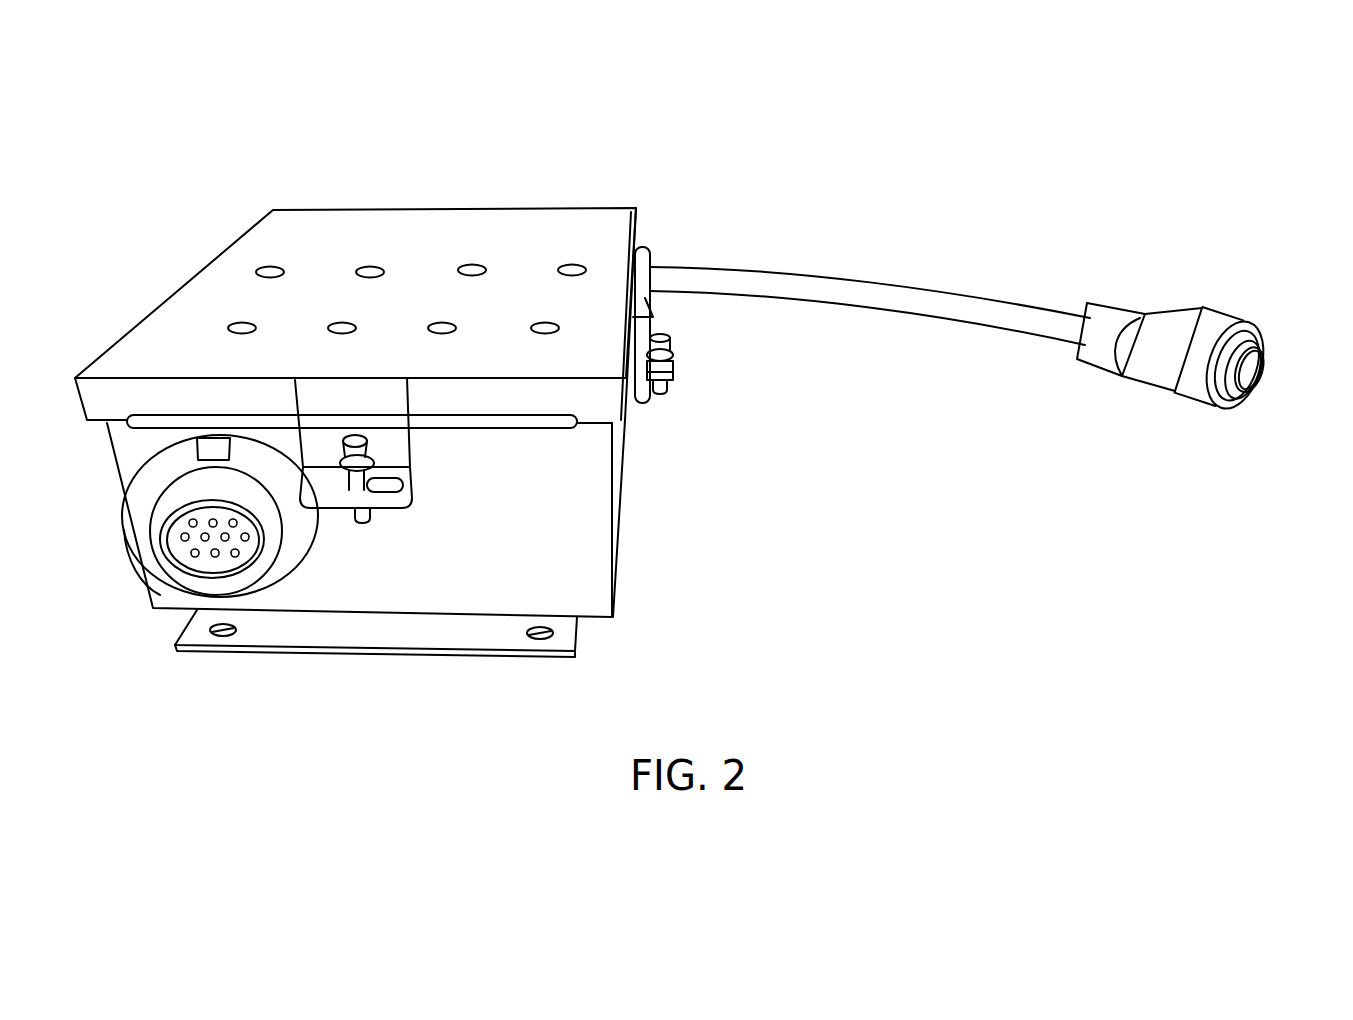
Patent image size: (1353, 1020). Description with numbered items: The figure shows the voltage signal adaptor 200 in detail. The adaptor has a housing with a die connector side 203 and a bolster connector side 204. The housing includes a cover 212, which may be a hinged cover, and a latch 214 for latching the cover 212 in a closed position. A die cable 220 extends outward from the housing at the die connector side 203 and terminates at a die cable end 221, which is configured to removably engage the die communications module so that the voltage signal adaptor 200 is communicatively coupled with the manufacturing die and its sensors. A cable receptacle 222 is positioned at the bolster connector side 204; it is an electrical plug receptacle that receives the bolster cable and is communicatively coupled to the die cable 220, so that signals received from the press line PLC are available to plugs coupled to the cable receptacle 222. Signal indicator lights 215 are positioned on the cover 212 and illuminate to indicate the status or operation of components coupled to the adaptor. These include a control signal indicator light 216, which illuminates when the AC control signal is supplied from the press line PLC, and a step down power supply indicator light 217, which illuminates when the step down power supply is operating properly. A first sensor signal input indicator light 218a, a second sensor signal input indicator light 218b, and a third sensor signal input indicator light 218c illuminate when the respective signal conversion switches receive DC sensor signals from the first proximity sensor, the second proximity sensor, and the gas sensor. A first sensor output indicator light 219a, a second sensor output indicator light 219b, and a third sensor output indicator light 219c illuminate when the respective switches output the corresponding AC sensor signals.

The voltage signal adaptor 200 is at (1022, 147).
The die connector side 203 is at (347, 673).
The bolster connector side 204 is at (578, 180).
The cover 212 is at (382, 227).
The latch 214 is at (330, 440).
The signal indicator lights 215 is at (470, 236).
The control signal indicator light 216 is at (240, 322).
The step down power supply indicator light 217 is at (268, 266).
The first sensor signal input indicator light 218a is at (355, 270).
The second sensor signal input indicator light 218b is at (458, 269).
The third sensor signal input indicator light 218c is at (558, 269).
The first sensor output indicator light 219a is at (328, 328).
The second sensor output indicator light 219b is at (428, 328).
The third sensor output indicator light 219c is at (531, 328).
The die cable 220 is at (841, 287).
The die cable end 221 is at (1263, 378).
The cable receptacle 222 is at (164, 563).